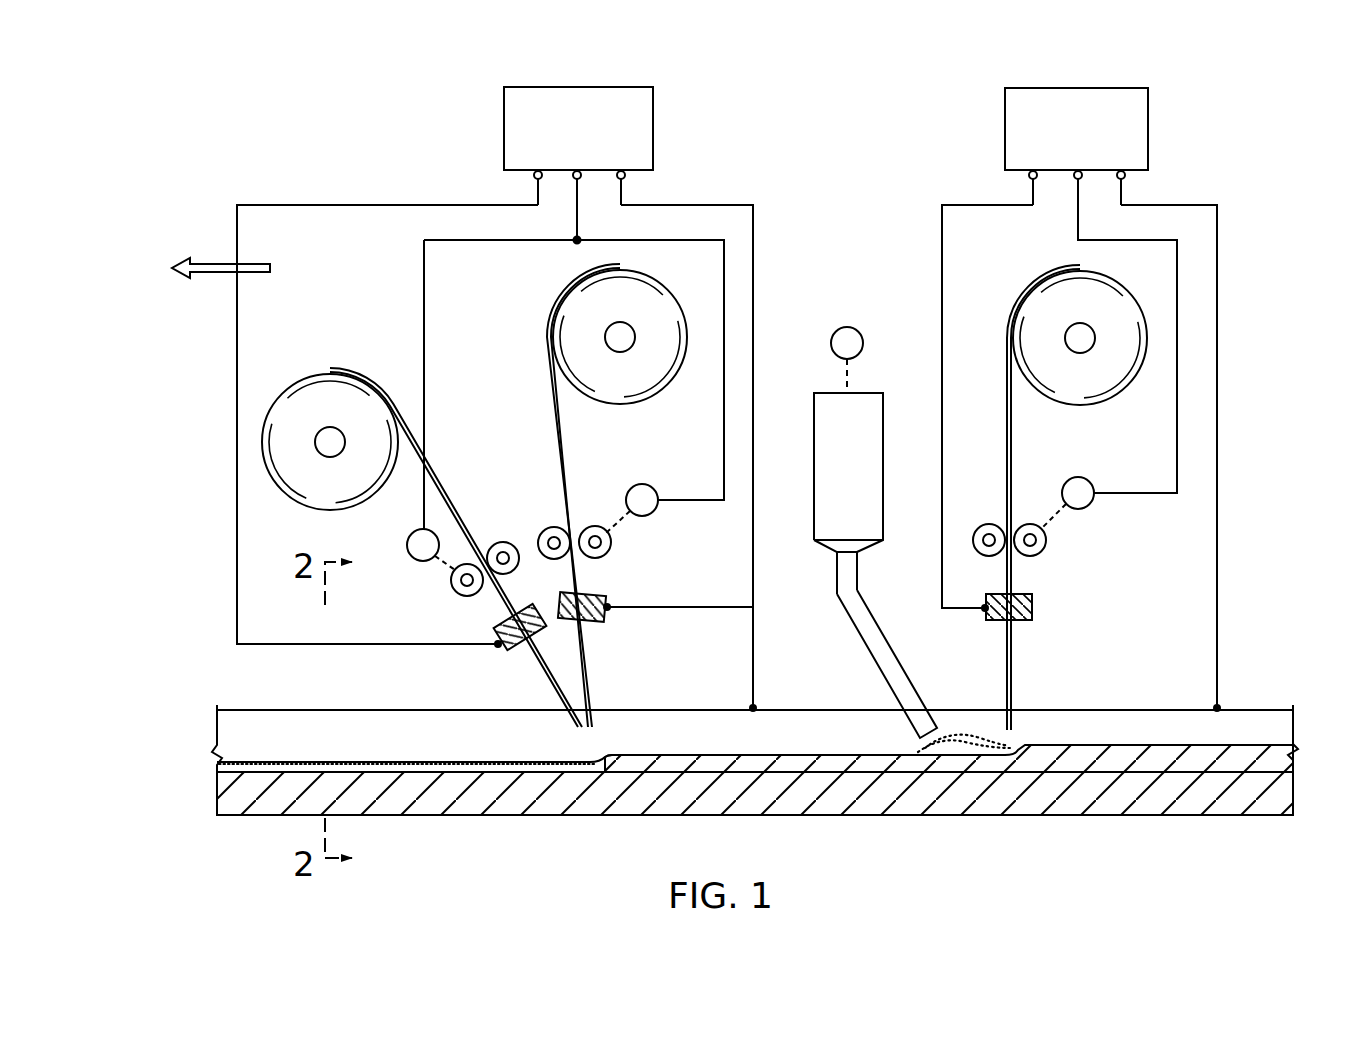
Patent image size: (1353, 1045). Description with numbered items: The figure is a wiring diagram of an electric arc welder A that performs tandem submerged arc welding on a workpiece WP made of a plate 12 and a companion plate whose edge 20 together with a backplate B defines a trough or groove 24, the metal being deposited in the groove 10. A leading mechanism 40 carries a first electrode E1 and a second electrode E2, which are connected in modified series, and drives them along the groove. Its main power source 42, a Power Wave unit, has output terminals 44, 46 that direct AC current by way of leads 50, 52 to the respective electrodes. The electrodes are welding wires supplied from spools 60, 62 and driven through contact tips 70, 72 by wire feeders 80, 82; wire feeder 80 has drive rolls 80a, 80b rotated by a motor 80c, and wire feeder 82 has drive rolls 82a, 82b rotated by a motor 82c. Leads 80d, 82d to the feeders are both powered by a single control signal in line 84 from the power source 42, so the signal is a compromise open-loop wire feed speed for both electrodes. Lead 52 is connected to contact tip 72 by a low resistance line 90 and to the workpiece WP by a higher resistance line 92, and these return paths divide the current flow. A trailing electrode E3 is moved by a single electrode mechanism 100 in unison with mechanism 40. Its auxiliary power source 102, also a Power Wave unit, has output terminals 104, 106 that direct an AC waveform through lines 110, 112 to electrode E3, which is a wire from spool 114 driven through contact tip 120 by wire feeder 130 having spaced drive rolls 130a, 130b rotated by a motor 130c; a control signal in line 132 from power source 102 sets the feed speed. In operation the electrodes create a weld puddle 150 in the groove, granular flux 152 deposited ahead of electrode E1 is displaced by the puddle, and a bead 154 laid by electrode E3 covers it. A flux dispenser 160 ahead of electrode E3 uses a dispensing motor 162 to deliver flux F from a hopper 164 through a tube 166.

The arc welder A is at (853, 118).
The groove 10 is at (412, 724).
The plate 12 is at (240, 708).
The edge 20 is at (470, 738).
The trough or groove 24 is at (312, 760).
The mechanism 40 is at (455, 112).
The main power source 42 is at (655, 125).
The output terminal 44 is at (534, 178).
The output terminal 46 is at (625, 178).
The lead 50 is at (237, 504).
The lead 52 is at (755, 322).
The spool 60 is at (312, 398).
The spool 62 is at (582, 300).
The contact tip 70 is at (512, 650).
The contact tip 72 is at (596, 627).
The wire feeder 80 is at (424, 565).
The drive roll 80a is at (455, 592).
The drive roll 80b is at (500, 542).
The motor 80c is at (407, 546).
The lead 80d is at (422, 288).
The wire feeder 82 is at (615, 500).
The drive roll 82a is at (611, 554).
The drive roll 82b is at (550, 527).
The motor 82c is at (646, 484).
The lead 82d is at (728, 275).
The line 84 is at (581, 216).
The line 90 is at (716, 606).
The line 92 is at (754, 683).
The single electrode mechanism 100 is at (920, 198).
The auxiliary power source 102 is at (1150, 106).
The output terminal 104 is at (1030, 178).
The output terminal 106 is at (1125, 178).
The line 110 is at (942, 320).
The line 112 is at (1218, 426).
The spool 114 is at (1045, 287).
The contact tip 120 is at (1040, 612).
The wire feeder 130 is at (1032, 511).
The drive roll 130a is at (974, 542).
The drive roll 130b is at (1046, 551).
The motor 130c is at (1086, 480).
The line 132 is at (1180, 357).
The weld puddle 150 is at (924, 768).
The granular flux 152 is at (580, 760).
The bead 154 is at (1152, 752).
The flux dispenser 160 is at (864, 502).
The dispensing motor 162 is at (849, 327).
The hopper 164 is at (836, 404).
The tube 166 is at (882, 650).
The first electrode E1 is at (444, 492).
The second electrode E2 is at (556, 434).
The trailing electrode E3 is at (1004, 417).
The flux F is at (950, 745).
The backplate B is at (1106, 820).
The workpiece WP is at (749, 764).